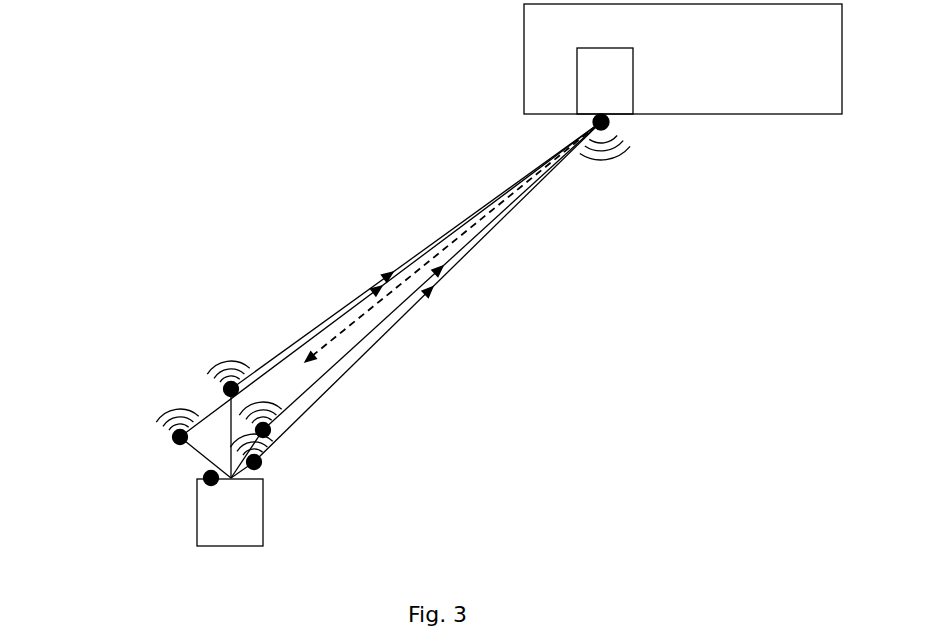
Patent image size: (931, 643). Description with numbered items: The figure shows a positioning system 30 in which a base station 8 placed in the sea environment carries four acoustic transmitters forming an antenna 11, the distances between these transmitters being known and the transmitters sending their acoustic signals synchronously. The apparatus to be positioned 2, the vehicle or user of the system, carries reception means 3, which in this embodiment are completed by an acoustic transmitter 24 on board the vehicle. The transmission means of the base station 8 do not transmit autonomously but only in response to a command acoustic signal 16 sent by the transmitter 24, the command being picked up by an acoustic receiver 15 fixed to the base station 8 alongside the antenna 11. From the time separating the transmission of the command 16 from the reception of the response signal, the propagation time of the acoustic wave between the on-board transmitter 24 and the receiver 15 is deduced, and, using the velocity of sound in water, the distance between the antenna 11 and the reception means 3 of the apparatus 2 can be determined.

The apparatus to be positioned 2 is at (524, 90).
The reception means 3 is at (630, 75).
The acoustic transmitter 24 is at (609, 122).
The positioning system 30 is at (340, 187).
The command acoustic signal 16 is at (347, 328).
The antenna 11 is at (125, 399).
The acoustic receiver 15 is at (205, 484).
The base station 8 is at (198, 537).